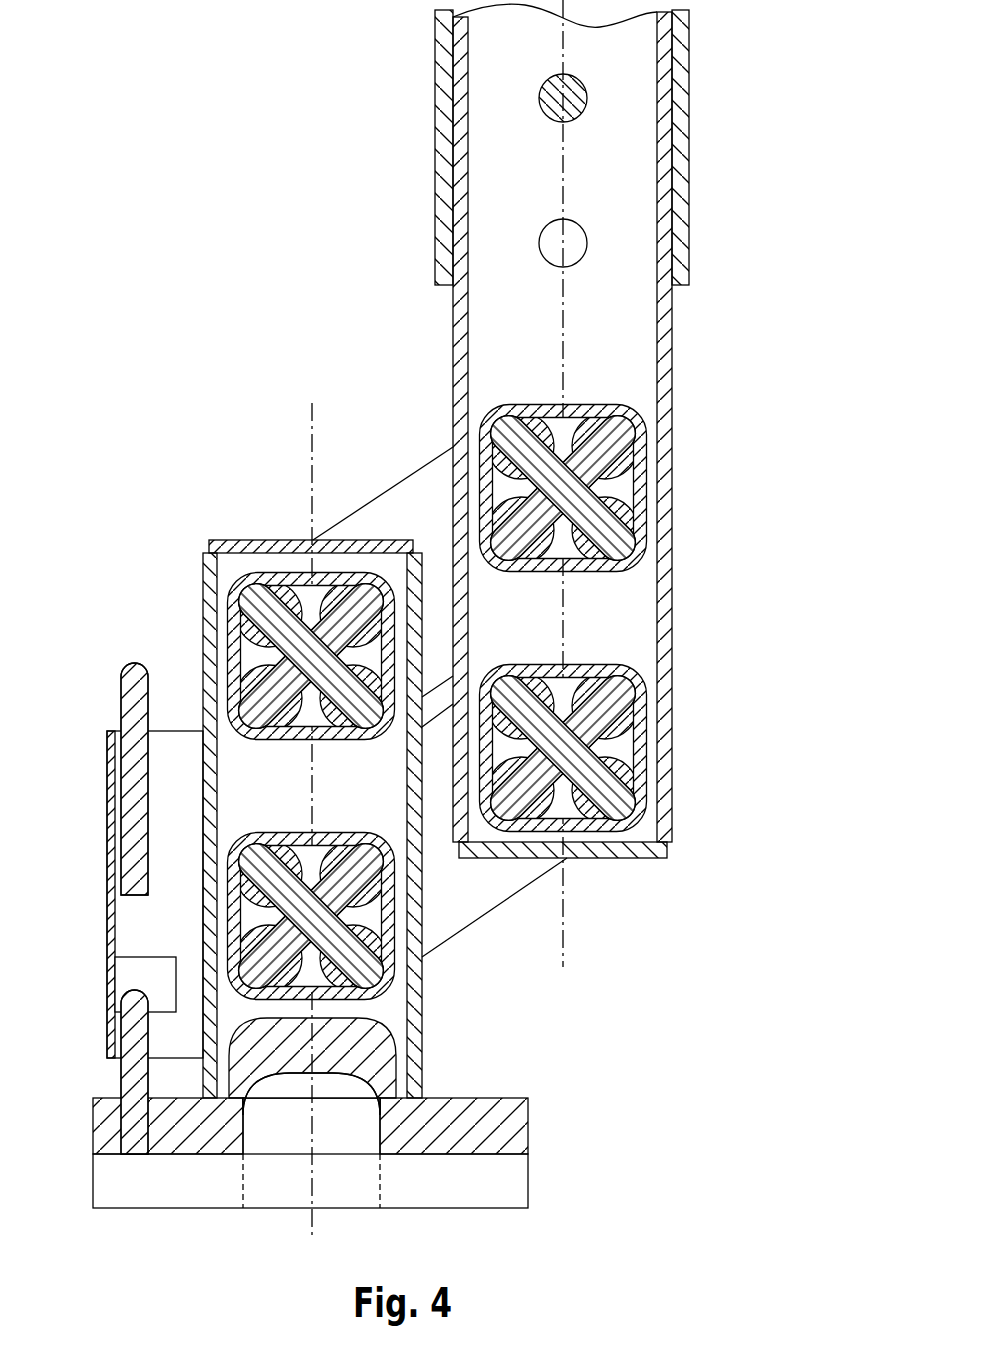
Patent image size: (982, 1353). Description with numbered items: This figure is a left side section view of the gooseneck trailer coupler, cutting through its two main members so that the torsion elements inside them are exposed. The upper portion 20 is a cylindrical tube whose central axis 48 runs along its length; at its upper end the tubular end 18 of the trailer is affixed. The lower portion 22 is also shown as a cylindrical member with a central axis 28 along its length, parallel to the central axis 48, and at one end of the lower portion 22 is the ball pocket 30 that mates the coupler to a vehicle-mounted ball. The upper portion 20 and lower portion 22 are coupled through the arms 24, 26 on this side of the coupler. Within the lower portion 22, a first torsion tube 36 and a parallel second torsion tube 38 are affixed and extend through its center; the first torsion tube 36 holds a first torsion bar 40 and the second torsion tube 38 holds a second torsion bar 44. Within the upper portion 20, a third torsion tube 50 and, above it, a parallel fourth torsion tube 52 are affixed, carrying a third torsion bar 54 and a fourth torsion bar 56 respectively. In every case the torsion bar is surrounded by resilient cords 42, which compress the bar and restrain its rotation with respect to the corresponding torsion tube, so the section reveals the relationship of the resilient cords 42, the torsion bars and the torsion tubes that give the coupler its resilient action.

The tubular end 18 is at (435, 101).
The upper portion 20 is at (677, 577).
The lower portion 22 is at (190, 657).
The arm 24 is at (413, 497).
The arm 26 is at (485, 890).
The central axis 28 is at (310, 438).
The ball pocket 30 is at (335, 1124).
The first torsion tube 36 is at (235, 932).
The second torsion tube 38 is at (260, 577).
The first torsion bar 40 is at (397, 973).
The resilient cords 42 is at (255, 612).
The second torsion bar 44 is at (303, 612).
The central axis 48 is at (563, 940).
The third torsion tube 50 is at (637, 700).
The fourth torsion tube 52 is at (637, 448).
The third torsion bar 54 is at (607, 737).
The fourth torsion bar 56 is at (607, 485).